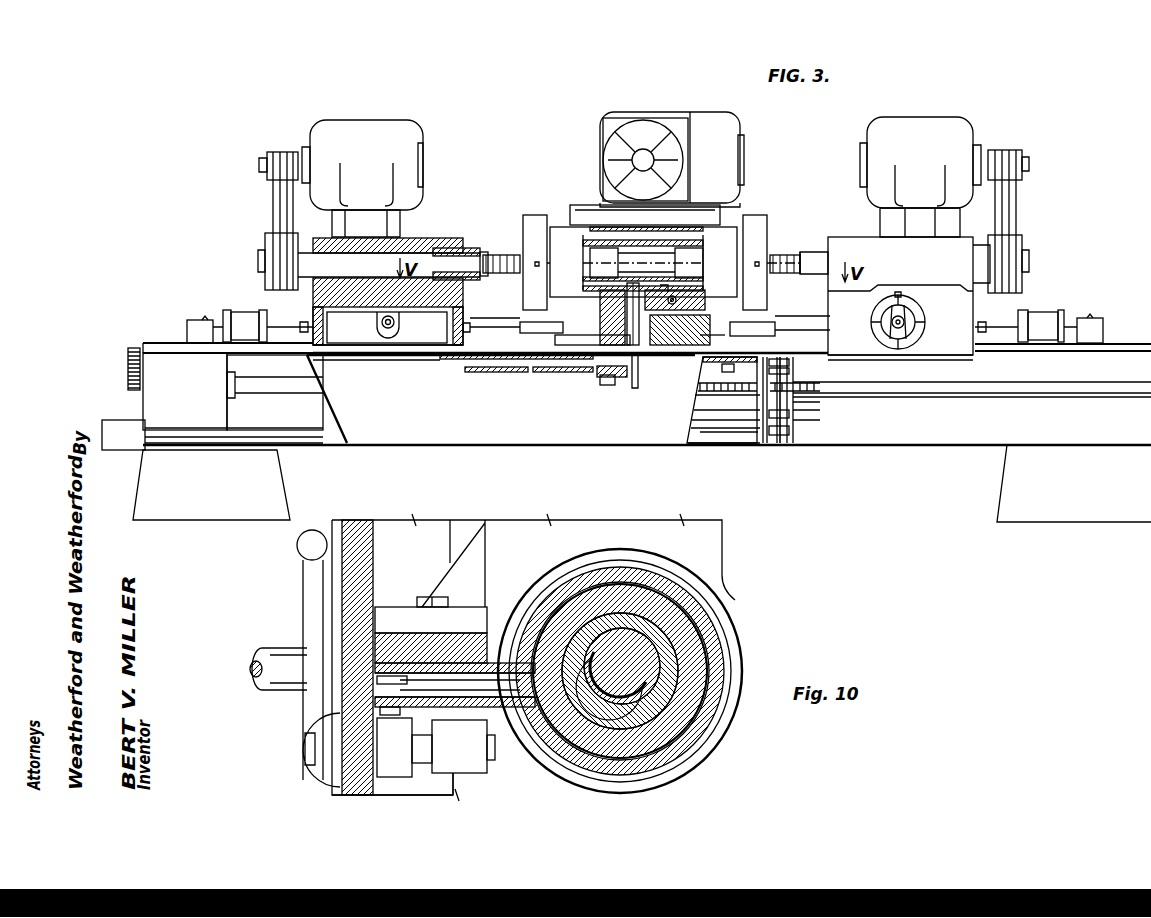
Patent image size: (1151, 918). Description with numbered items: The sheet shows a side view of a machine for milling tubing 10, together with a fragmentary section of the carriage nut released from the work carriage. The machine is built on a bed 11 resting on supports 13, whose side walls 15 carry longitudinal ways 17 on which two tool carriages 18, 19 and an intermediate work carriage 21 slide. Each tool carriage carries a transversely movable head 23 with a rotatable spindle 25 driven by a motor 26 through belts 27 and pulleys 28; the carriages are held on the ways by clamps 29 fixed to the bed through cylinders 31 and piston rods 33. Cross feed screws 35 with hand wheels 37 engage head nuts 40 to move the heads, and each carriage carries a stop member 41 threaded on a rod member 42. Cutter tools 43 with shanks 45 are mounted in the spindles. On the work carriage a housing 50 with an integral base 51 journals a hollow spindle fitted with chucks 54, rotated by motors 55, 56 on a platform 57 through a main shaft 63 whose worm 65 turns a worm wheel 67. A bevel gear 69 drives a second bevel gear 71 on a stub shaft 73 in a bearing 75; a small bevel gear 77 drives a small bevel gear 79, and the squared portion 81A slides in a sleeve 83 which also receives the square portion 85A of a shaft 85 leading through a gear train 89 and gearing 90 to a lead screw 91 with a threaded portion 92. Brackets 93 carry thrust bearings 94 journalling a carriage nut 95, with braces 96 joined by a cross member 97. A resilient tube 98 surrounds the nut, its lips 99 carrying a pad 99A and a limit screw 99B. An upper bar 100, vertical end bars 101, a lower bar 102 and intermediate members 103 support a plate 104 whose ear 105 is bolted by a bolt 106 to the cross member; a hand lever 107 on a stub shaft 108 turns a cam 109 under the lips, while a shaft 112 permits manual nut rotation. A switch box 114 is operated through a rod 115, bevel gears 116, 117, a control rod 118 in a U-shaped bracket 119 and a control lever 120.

In FIG. 3, the tubing 10 is at (790, 250).
In FIG. 3, the bed 11 is at (325, 430).
In FIG. 3, the supports 13 is at (1032, 490).
In FIG. 3, the side walls 15 is at (918, 435).
In FIG. 3, the ways 17 is at (150, 348).
In FIG. 3, the tool carriage 18 is at (975, 320).
In FIG. 3, the tool carriage 19 is at (313, 312).
In FIG. 3, the work carriage 21 is at (530, 312).
In FIG. 3, the head 23 is at (848, 240).
In FIG. 3, the spindle 25 is at (1042, 262).
In FIG. 3, the motor 26 is at (343, 126).
In FIG. 3, the belts 27 is at (1040, 205).
In FIG. 3, the pulleys 28 is at (1038, 250).
In FIG. 3, the clamps 29 is at (1108, 325).
In FIG. 3, the cylinders 31 is at (1055, 312).
In FIG. 3, the piston rods 33 is at (990, 340).
In FIG. 3, the cross feed screws 35 is at (928, 318).
In FIG. 3, the hand wheels 37 is at (912, 330).
In FIG. 3, the head nut 40 is at (376, 330).
In FIG. 3, the stop member 41 is at (768, 322).
In FIG. 3, the threaded rod member 42 is at (825, 325).
In FIG. 3, the cutter tools 43 is at (812, 260).
In FIG. 3, the shank 45 is at (488, 252).
In FIG. 3, the housing 50 is at (738, 235).
In FIG. 3, the base 51 is at (740, 340).
In FIG. 3, the chucks 54 is at (770, 222).
In FIG. 3, the motor 55 is at (735, 124).
In FIG. 3, the motor 56 is at (648, 117).
In FIG. 3, the platform 57 is at (596, 218).
In FIG. 3, the main shaft 63 is at (680, 302).
In FIG. 3, the worm 65 is at (668, 302).
In FIG. 3, the worm wheel 67 is at (676, 289).
In FIG. 3, the bevel gear 69 is at (655, 240).
In FIG. 3, the second bevel gear 71 is at (612, 298).
In FIG. 3, the stub shaft 73 is at (636, 350).
In FIG. 3, the bearing 75 is at (595, 345).
In FIG. 3, the small bevel gear 77 is at (645, 350).
In FIG. 3, the small bevel gear 79 is at (612, 385).
In FIG. 3, the squared portion 81A is at (572, 373).
In FIG. 3, the sleeve 83 is at (512, 372).
In FIG. 3, the shaft 85 is at (358, 366).
In FIG. 3, the square portion 85A is at (455, 373).
In FIG. 3, the gear train 89 is at (128, 357).
In FIG. 3, the gearing 90 is at (143, 400).
In FIG. 3, the lead screw 91 is at (262, 388).
In FIG. 3, the threaded portion 92 is at (793, 405).
In FIG. 10, the threaded portion 92 is at (640, 645).
In FIG. 10, the brackets 93 is at (695, 542).
In FIG. 10, the thrust bearings 94 is at (720, 705).
In FIG. 10, the carriage nut 95 is at (665, 655).
In FIG. 10, the braces 96 is at (465, 565).
In FIG. 10, the cross member 97 is at (405, 635).
In FIG. 10, the tube 98 is at (695, 605).
In FIG. 10, the lips 99 is at (480, 680).
In FIG. 10, the pad 99A is at (320, 672).
In FIG. 10, the screw 99B is at (402, 712).
In FIG. 3, the upper horizontal bar 100 is at (755, 373).
In FIG. 3, the vertical end bars 101 is at (758, 403).
In FIG. 3, the lower bar member 102 is at (708, 420).
In FIG. 10, the intermediate vertical members 103 is at (440, 790).
In FIG. 10, the plate 104 is at (345, 625).
In FIG. 10, the ear 105 is at (478, 605).
In FIG. 10, the bolt 106 is at (430, 597).
In FIG. 10, the hand lever 107 is at (303, 580).
In FIG. 10, the stub shaft 108 is at (503, 760).
In FIG. 10, the cam 109 is at (450, 748).
In FIG. 10, the shaft 112 is at (490, 686).
In FIG. 3, the switch box 114 is at (105, 435).
In FIG. 3, the rod 115 is at (735, 443).
In FIG. 3, the bevel gear 116 is at (788, 443).
In FIG. 3, the bevel gear 117 is at (795, 432).
In FIG. 3, the control rod 118 is at (795, 416).
In FIG. 3, the U-shaped bracket 119 is at (795, 373).
In FIG. 3, the control lever 120 is at (792, 366).